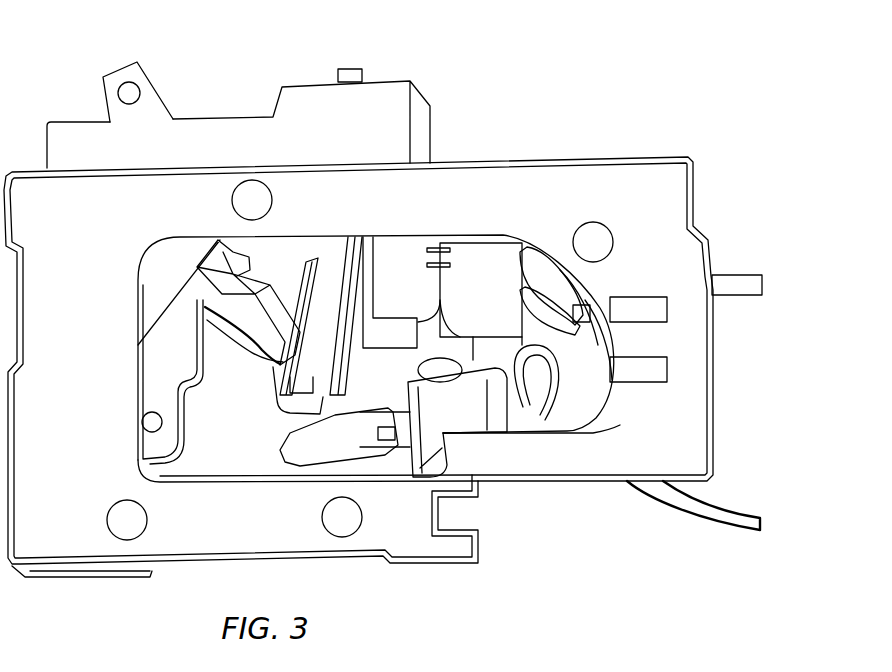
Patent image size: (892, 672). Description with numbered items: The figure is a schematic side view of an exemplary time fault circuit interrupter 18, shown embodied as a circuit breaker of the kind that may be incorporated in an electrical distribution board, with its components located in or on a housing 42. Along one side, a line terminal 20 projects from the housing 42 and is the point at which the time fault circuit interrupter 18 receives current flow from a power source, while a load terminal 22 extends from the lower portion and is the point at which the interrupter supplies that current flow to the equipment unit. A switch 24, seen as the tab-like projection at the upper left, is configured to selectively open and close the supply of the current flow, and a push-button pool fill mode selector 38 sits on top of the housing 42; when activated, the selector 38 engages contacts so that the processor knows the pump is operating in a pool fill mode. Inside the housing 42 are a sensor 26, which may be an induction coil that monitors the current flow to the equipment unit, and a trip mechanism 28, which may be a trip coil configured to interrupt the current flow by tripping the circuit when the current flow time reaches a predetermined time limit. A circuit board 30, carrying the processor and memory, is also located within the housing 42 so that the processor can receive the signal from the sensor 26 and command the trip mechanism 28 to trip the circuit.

The time fault circuit interrupter 18 is at (607, 105).
The line terminal 20 is at (745, 275).
The load terminal 22 is at (728, 520).
The switch 24 is at (152, 82).
The sensor 26 is at (470, 253).
The trip mechanism 28 is at (440, 422).
The circuit board 30 is at (580, 387).
The pool fill mode selector 38 is at (352, 65).
The housing 42 is at (50, 580).